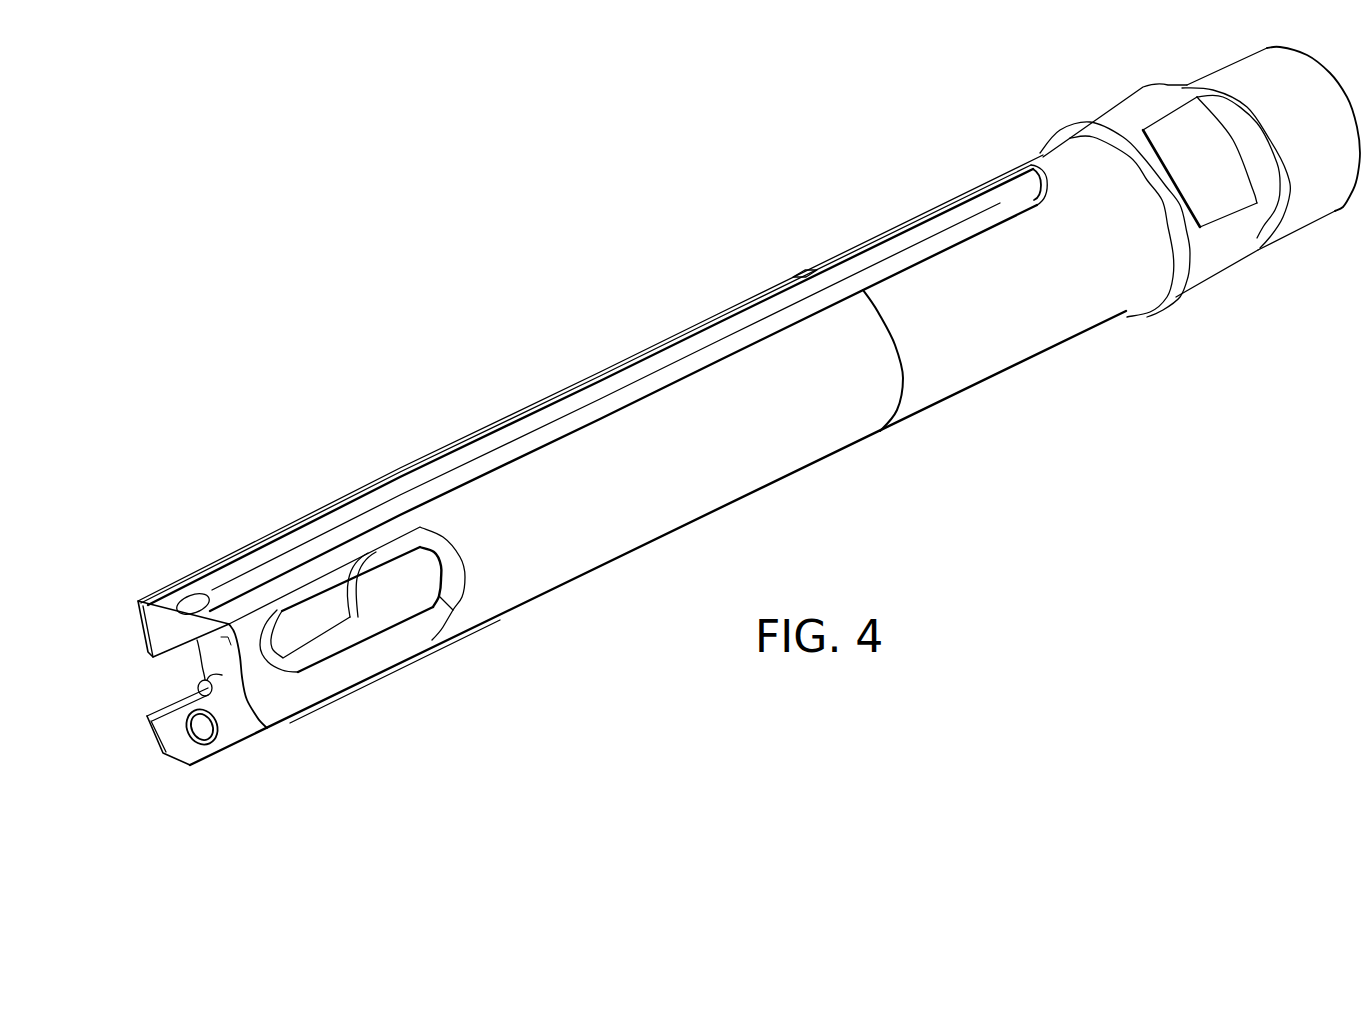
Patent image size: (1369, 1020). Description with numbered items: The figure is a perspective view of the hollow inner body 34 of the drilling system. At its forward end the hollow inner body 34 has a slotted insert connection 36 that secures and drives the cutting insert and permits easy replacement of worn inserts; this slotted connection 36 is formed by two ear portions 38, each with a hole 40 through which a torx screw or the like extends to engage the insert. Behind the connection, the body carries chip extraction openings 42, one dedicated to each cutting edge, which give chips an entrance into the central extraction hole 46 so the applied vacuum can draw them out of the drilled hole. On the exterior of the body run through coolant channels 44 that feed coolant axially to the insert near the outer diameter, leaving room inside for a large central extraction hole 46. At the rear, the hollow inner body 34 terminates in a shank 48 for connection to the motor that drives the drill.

The hollow inner body 34 is at (596, 256).
The slotted insert connection 36 is at (127, 673).
The ear portion 38 is at (137, 620).
The holes 40 is at (206, 730).
The chip extraction openings 42 is at (366, 633).
The through coolant channels 44 is at (323, 519).
The central extraction hole 46 is at (393, 579).
The shank 48 is at (1328, 178).